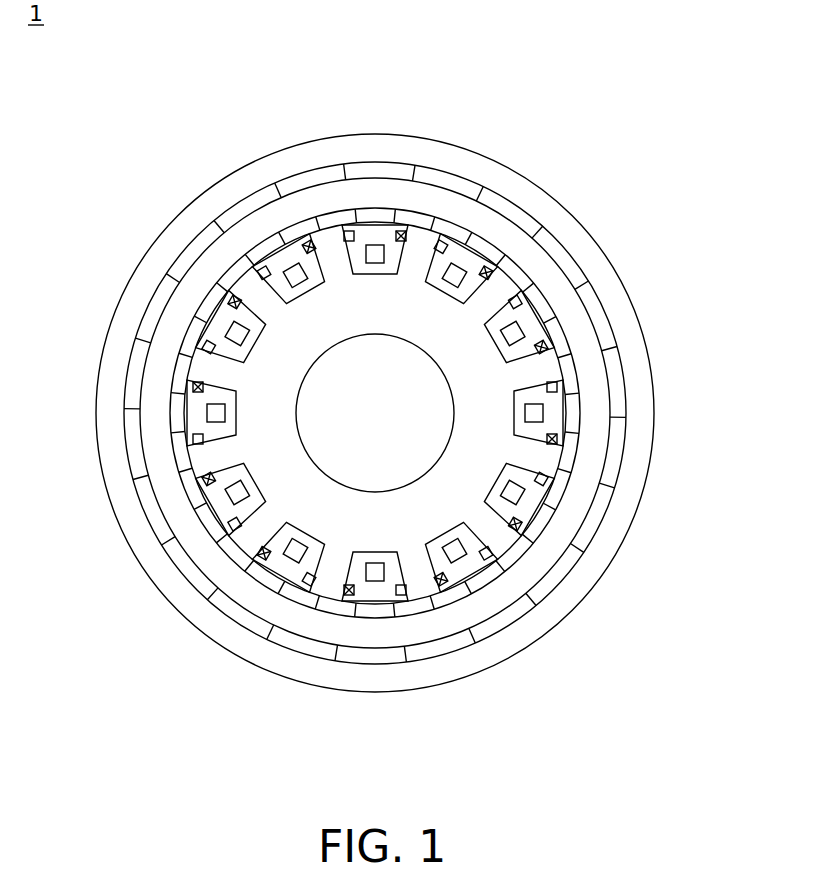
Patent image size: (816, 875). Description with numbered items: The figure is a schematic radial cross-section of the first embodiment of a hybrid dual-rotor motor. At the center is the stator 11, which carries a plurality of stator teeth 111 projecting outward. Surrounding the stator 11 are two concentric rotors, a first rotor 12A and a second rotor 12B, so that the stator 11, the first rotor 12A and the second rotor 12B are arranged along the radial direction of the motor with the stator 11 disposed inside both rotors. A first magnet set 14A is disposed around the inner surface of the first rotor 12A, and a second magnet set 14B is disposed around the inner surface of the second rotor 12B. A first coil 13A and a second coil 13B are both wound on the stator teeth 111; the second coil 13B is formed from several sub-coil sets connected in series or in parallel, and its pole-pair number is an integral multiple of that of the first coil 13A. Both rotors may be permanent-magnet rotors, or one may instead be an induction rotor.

The stator 11 is at (440, 357).
The stator teeth 111 is at (417, 258).
The first rotor 12A is at (310, 153).
The second rotor 12B is at (362, 193).
The first coil 13A is at (517, 498).
The second coil 13B is at (515, 528).
The first magnet set 14A is at (242, 210).
The second magnet set 14B is at (300, 230).